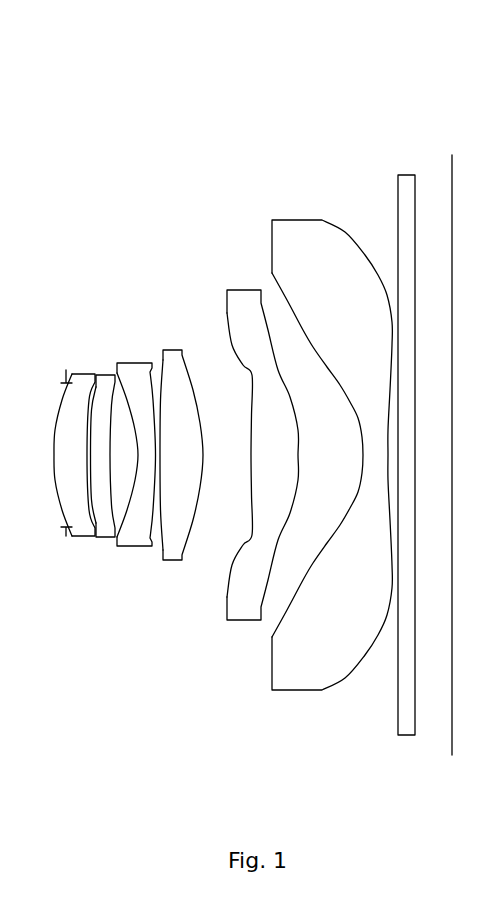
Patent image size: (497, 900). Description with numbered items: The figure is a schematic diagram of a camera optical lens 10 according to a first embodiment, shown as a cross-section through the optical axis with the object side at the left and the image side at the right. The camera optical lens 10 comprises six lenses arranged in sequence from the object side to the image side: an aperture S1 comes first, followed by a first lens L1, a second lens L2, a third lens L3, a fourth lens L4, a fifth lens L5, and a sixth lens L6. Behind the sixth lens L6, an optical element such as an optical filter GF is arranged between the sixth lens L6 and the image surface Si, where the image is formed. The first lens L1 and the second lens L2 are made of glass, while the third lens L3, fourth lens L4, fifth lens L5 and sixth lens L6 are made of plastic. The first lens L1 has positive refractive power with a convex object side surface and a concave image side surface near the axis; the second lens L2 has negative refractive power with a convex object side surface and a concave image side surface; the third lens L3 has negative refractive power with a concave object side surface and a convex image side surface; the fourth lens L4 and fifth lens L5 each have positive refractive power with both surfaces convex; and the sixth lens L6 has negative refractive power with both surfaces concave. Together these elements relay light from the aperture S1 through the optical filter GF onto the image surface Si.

The camera optical lens 10 is at (275, 42).
The aperture S1 is at (53, 439).
The first lens L1 is at (74, 443).
The second lens L2 is at (103, 436).
The third lens L3 is at (136, 439).
The fourth lens L4 is at (181, 438).
The fifth lens L5 is at (263, 443).
The sixth lens L6 is at (332, 444).
The optical filter GF is at (400, 438).
The image surface Si is at (450, 441).